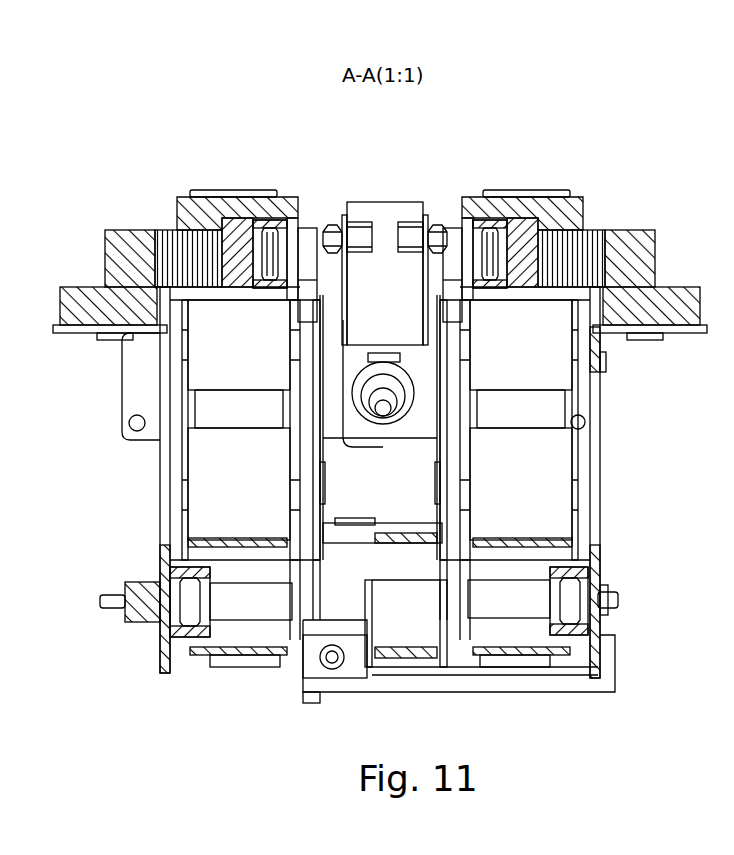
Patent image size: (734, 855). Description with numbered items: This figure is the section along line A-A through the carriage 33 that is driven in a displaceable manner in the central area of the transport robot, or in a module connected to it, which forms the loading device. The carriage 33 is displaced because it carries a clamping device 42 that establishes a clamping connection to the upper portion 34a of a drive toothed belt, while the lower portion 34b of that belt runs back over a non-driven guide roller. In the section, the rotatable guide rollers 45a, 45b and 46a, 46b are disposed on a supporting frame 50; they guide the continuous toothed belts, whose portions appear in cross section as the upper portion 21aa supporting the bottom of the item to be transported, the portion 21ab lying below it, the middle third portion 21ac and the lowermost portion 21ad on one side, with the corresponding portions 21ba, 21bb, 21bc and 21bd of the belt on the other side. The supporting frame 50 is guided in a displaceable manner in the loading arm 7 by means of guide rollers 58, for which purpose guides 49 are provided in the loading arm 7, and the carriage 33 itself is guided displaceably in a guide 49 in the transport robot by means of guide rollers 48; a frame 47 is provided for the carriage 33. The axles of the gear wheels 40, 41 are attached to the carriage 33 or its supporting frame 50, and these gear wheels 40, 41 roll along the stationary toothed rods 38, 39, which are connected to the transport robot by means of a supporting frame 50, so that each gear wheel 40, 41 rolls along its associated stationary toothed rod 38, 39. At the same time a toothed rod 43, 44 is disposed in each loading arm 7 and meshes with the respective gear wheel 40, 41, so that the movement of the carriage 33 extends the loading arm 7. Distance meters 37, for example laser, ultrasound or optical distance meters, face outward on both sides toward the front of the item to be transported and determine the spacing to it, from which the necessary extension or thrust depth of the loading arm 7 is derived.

The carriage 33 is at (583, 122).
The distance meter 37 is at (385, 215).
The toothed rod 38 is at (130, 242).
The toothed rod 39 is at (628, 238).
The gear wheel 40 is at (183, 233).
The gear wheel 41 is at (580, 242).
The clamping device 42 is at (343, 530).
The toothed rod 43 is at (522, 235).
The toothed rod 44 is at (233, 240).
The guide roller 45a is at (205, 378).
The guide roller 45b is at (210, 480).
The guide roller 46a is at (552, 378).
The guide roller 46b is at (552, 510).
The frame 47 is at (437, 490).
The guide roller 48 is at (178, 628).
The guide 49 is at (150, 605).
The supporting frame 50 is at (75, 335).
The guide roller 58 is at (292, 222).
The loading arm 7 is at (270, 230).
The upper portion of toothed belt 21aa is at (192, 190).
The second portion of toothed belt 21ab is at (122, 340).
The third portion of toothed belt 21ac is at (205, 548).
The lowermost portion of toothed belt 21ad is at (193, 655).
The upper portion of toothed belt 21ba is at (485, 190).
The second portion of toothed belt 21bb is at (603, 340).
The third portion of toothed belt 21bc is at (560, 548).
The lowermost portion of toothed belt 21bd is at (520, 655).
The upper portion of toothed belt 34a is at (375, 540).
The lower portion of toothed belt 34b is at (422, 658).